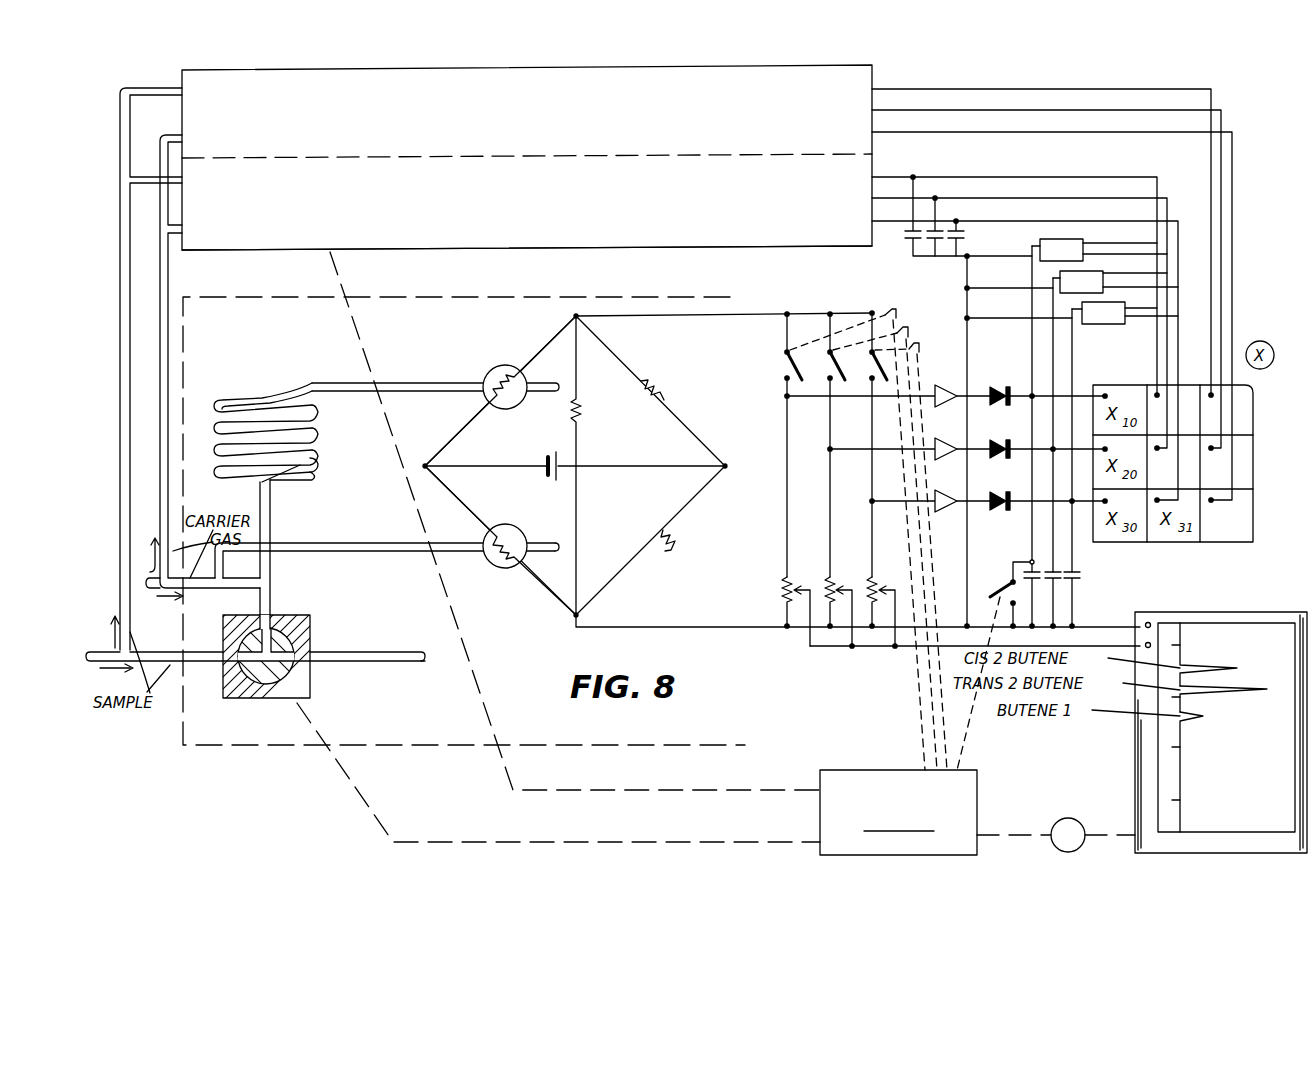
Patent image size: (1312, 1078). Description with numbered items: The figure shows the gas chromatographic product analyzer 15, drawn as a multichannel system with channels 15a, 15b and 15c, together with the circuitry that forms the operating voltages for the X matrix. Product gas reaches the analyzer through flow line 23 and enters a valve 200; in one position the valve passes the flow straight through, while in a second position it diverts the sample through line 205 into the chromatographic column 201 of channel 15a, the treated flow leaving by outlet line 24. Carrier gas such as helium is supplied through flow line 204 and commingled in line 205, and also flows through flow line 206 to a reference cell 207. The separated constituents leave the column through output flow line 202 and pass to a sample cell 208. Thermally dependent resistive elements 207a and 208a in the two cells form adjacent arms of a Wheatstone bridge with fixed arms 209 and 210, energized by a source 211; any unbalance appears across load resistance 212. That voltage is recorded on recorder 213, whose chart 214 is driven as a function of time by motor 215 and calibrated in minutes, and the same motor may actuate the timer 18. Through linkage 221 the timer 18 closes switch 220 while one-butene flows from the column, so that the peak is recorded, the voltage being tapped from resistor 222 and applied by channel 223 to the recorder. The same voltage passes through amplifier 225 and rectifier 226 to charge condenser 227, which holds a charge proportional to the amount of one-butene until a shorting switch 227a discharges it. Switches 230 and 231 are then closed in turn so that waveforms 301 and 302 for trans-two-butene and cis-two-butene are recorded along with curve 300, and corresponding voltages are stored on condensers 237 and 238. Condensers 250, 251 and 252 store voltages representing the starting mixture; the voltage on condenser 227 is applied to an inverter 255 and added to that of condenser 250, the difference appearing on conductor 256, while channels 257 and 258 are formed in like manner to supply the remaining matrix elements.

The product analyzer 15 is at (537, 58).
The analyzer channel 15a is at (447, 297).
The analyzer channel 15b is at (447, 211).
The analyzer channel 15c is at (447, 117).
The timer 18 is at (885, 770).
The flow line 23 is at (96, 650).
The sample outlet line 24 is at (384, 663).
The valve 200 is at (311, 625).
The chromatographic column 201 is at (320, 468).
The output flow line 202 is at (445, 378).
The flow line 204 is at (195, 590).
The line 205 is at (273, 581).
The flow line 206 is at (402, 541).
The reference cell 207 is at (518, 531).
The resistive element 207a is at (503, 557).
The sample cell 208 is at (500, 410).
The resistive element 208a is at (503, 384).
The bridge arm 209 is at (668, 543).
The bridge arm 210 is at (654, 385).
The source 211 is at (549, 479).
The load resistance 212 is at (584, 414).
The recorder 213 is at (1228, 612).
The recorder chart 214 is at (1250, 800).
The motor 215 is at (1052, 835).
The switch 220 is at (795, 362).
The linkage 221 is at (885, 311).
The resistor 222 is at (782, 590).
The channel 223 is at (908, 648).
The amplifier 225 is at (951, 370).
The rectifier 226 is at (998, 384).
The condenser 227 is at (1013, 562).
The shorting switch 227a is at (1000, 592).
The switch 230 is at (832, 362).
The switch 231 is at (877, 362).
The condenser 237 is at (1050, 571).
The condenser 238 is at (1078, 572).
The condenser 250 is at (906, 236).
The condenser 251 is at (930, 241).
The condenser 252 is at (964, 236).
The inverter 255 is at (1087, 242).
The conductor 256 is at (1157, 346).
The channel 257 is at (1167, 360).
The channel 258 is at (1178, 376).
The curve 300 is at (1190, 722).
The waveform 301 is at (1240, 688).
The waveform 302 is at (1208, 665).